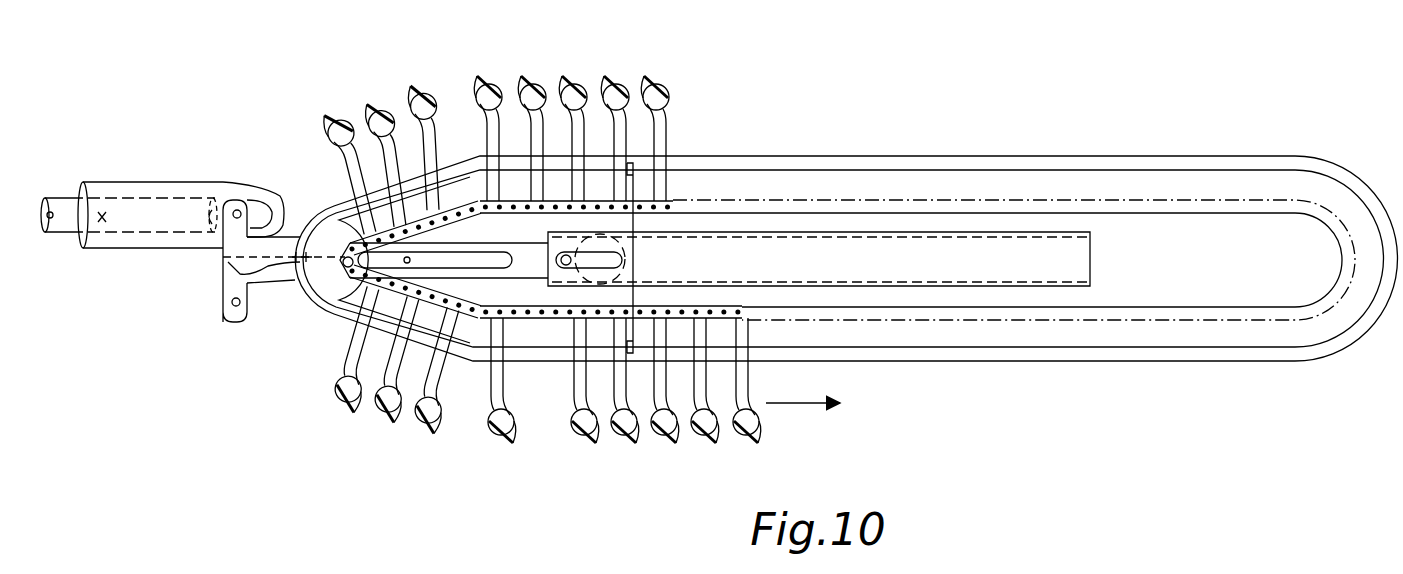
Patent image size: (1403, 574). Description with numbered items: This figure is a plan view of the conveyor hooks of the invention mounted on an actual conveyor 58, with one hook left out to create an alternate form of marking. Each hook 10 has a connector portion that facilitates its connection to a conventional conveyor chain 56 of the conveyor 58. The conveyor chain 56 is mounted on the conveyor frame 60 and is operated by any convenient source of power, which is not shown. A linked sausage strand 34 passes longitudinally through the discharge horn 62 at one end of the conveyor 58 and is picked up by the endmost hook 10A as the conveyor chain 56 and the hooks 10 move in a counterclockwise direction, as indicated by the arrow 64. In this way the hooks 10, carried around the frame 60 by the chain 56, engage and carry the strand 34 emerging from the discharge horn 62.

The hook 10 is at (556, 56).
The endmost hook 10A is at (280, 288).
The linked sausage strand 34 is at (58, 197).
The conveyor chain 56 is at (702, 208).
The conveyor 58 is at (1047, 124).
The conveyor frame 60 is at (1157, 354).
The discharge horn 62 is at (174, 240).
The arrow 64 is at (800, 403).